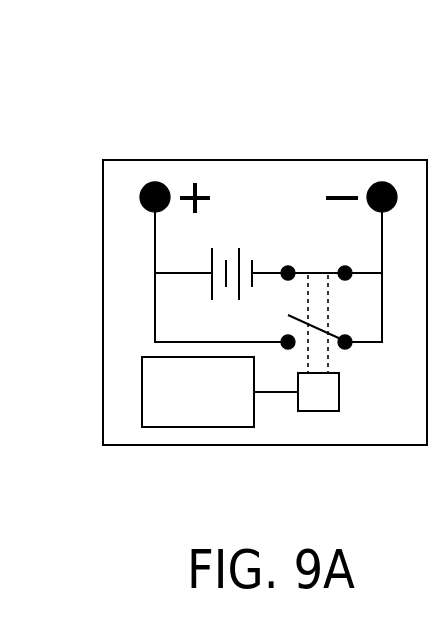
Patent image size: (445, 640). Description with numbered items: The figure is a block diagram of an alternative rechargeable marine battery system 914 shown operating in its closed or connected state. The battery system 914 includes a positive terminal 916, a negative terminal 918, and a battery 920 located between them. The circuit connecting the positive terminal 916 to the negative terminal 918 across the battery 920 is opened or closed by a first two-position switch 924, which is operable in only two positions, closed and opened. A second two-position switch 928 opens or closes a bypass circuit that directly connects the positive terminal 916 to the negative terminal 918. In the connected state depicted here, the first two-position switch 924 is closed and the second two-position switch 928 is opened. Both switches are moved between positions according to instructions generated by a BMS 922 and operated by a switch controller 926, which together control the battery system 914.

The battery system 914 is at (86, 116).
The positive terminal 916 is at (205, 182).
The negative terminal 918 is at (351, 188).
The battery 920 is at (242, 245).
The BMS 922 is at (182, 428).
The first two-position switch 924 is at (322, 273).
The switch controller 926 is at (339, 385).
The second two-position switch 928 is at (317, 329).